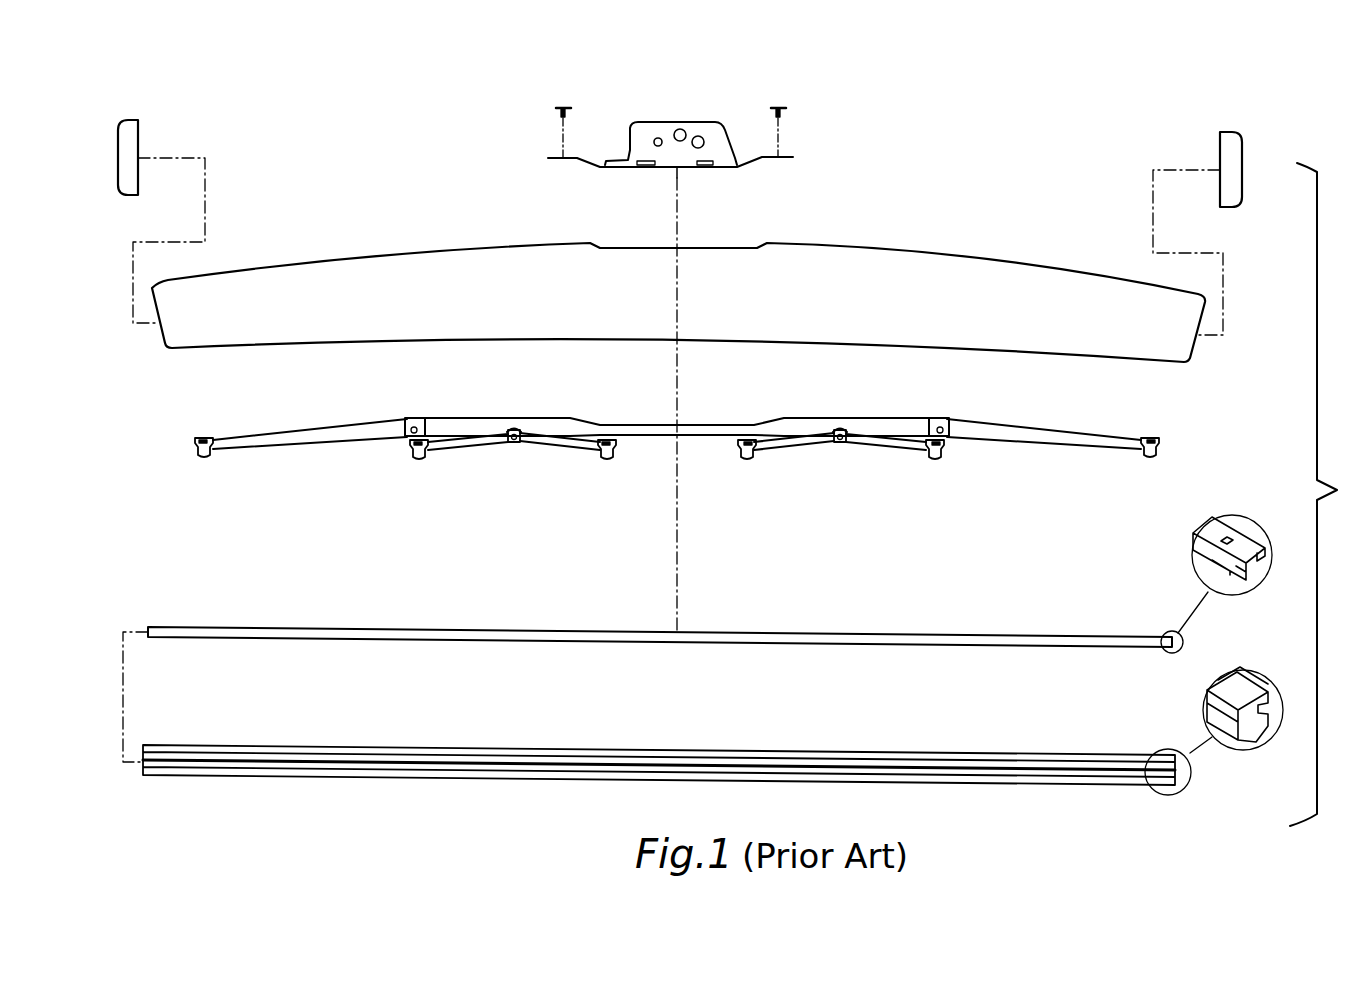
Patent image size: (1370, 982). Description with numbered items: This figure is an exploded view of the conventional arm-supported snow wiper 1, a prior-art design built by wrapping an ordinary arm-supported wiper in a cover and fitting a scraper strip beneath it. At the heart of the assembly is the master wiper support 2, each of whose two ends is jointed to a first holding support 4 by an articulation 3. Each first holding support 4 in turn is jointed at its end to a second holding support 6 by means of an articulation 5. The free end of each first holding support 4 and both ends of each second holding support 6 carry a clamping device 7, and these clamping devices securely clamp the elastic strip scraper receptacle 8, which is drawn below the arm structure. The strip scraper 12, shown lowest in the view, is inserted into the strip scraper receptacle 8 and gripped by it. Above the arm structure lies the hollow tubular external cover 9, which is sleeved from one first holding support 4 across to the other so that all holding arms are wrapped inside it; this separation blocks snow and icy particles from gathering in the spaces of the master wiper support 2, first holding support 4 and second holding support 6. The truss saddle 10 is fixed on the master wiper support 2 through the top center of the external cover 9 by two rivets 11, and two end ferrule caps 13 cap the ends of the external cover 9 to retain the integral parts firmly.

The conventional arm-supported snow wiper 1 is at (1359, 513).
The master wiper support 2 is at (625, 427).
The articulation 3 is at (416, 427).
The first holding support 4 is at (313, 432).
The articulation 5 is at (514, 441).
The second holding support 6 is at (559, 444).
The clamping device 7 is at (205, 454).
The elastic strip scraper receptacle 8 is at (573, 640).
The hollow tubular external cover 9 is at (289, 263).
The truss saddle 10 is at (649, 124).
The rivet 11 is at (563, 102).
The strip scraper 12 is at (451, 757).
The end ferrule cap 13 is at (130, 127).